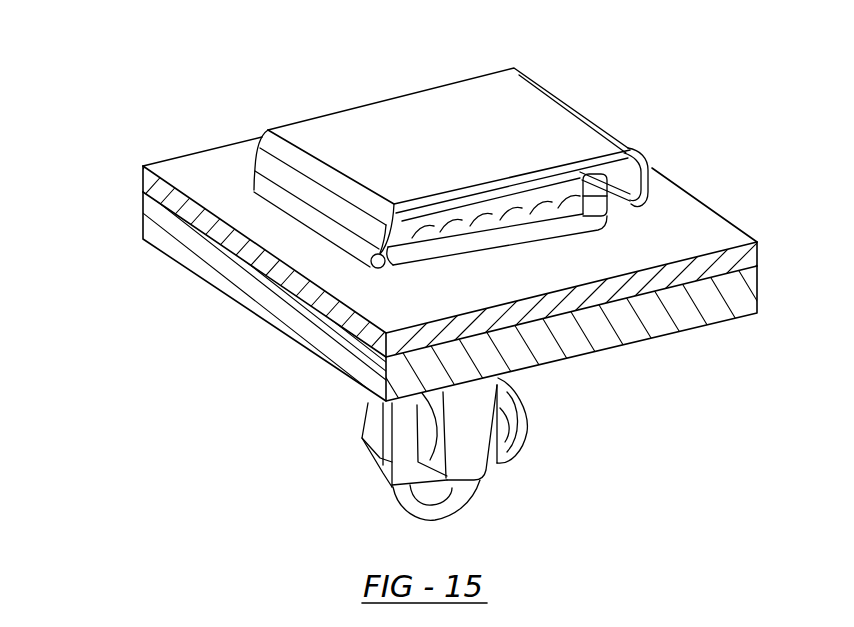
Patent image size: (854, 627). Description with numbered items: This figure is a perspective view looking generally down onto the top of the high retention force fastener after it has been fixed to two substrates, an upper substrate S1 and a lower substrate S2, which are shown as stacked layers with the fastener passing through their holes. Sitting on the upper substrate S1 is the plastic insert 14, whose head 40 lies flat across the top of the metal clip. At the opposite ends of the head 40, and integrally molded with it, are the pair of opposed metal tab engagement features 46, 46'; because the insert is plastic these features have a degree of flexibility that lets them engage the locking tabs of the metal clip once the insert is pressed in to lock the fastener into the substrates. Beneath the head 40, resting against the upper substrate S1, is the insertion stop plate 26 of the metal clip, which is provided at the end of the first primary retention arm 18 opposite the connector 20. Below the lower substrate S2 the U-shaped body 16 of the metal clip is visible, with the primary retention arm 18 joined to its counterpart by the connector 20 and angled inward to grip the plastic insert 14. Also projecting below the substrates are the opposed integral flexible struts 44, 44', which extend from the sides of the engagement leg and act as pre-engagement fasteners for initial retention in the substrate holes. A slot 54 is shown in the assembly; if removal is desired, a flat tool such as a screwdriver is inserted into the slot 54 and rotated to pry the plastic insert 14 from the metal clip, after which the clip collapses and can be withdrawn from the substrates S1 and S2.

The upper substrate S1 is at (150, 184).
The lower substrate S2 is at (166, 247).
The plastic insert 14 is at (543, 113).
The head 40 is at (422, 110).
The metal tab engagement feature 46 is at (284, 174).
The metal tab engagement feature 46' is at (673, 158).
The slot 54 is at (583, 221).
The insertion stop plate 26 is at (433, 240).
The U-shaped body 16 is at (480, 442).
The first primary retention arm 18 is at (458, 458).
The connector 20 is at (465, 507).
The integral flexible strut 44 is at (369, 451).
The integral flexible strut 44' is at (583, 420).